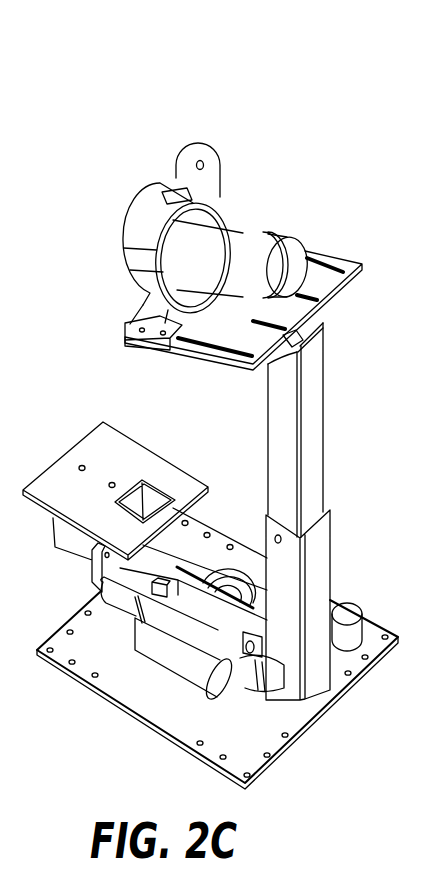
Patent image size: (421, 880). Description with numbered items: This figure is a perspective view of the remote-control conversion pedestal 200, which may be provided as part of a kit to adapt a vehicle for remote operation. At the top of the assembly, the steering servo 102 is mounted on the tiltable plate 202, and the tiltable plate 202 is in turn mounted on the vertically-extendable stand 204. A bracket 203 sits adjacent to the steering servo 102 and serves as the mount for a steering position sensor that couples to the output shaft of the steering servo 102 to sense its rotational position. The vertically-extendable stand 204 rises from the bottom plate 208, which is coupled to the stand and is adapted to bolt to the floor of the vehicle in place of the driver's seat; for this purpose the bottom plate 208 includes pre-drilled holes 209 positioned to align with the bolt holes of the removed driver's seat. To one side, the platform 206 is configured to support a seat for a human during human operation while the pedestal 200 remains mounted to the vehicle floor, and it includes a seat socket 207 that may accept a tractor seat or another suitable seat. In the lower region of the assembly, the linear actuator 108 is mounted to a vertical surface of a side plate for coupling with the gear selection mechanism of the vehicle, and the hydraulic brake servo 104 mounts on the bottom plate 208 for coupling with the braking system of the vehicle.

The remote-control conversion pedestal 200 is at (229, 71).
The bracket 203 is at (203, 143).
The steering servo 102 is at (238, 232).
The tiltable plate 202 is at (357, 260).
The vertically-extendable stand 204 is at (327, 497).
The platform 206 is at (113, 452).
The seat socket 207 is at (153, 490).
The linear actuator 108 is at (132, 595).
The hydraulic brake servo 104 is at (343, 604).
The bottom plate 208 is at (200, 760).
The pre-drilled holes 209 is at (247, 778).